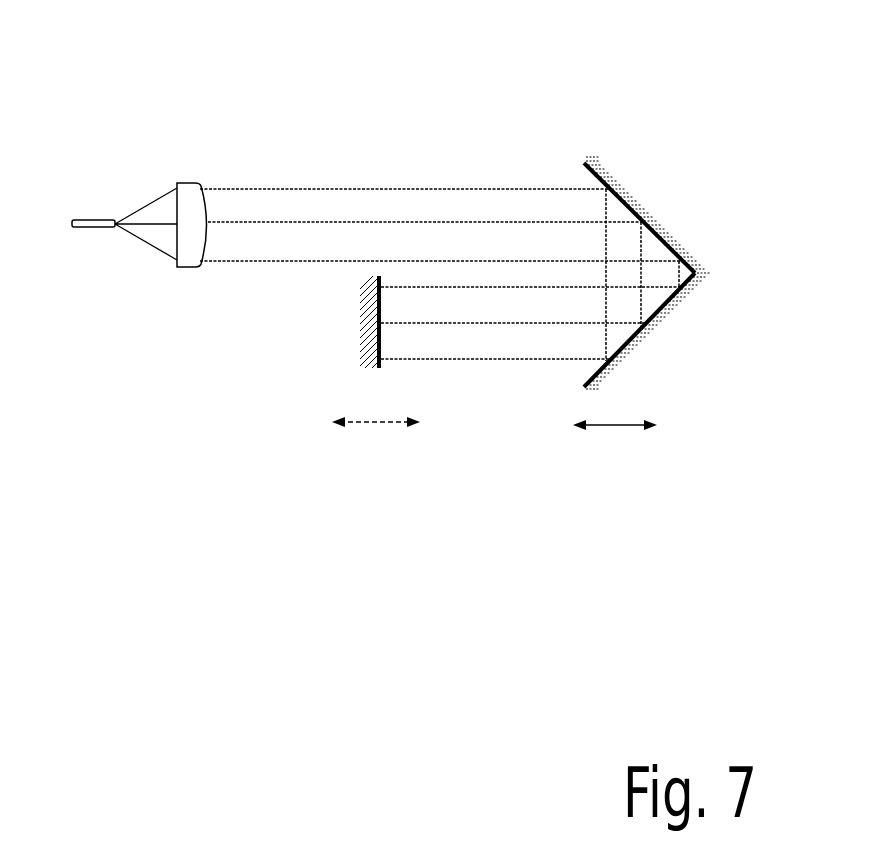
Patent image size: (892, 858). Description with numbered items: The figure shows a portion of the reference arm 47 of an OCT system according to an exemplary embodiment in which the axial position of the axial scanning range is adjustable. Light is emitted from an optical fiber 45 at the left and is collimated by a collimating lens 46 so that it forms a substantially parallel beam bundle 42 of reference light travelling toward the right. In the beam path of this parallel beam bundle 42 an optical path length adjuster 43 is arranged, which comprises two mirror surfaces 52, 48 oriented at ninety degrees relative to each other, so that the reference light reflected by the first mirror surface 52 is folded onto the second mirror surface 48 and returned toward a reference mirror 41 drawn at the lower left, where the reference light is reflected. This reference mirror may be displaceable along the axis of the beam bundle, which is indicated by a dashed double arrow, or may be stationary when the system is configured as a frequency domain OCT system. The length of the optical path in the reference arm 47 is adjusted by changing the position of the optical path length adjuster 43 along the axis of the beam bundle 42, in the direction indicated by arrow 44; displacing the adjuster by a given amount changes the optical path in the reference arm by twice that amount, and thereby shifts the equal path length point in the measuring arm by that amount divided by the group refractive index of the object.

The reference arm 47 is at (231, 66).
The optical fiber 45 is at (95, 218).
The collimating lens 46 is at (189, 190).
The parallel beam bundle 42 is at (326, 200).
The mirror surface 48 is at (617, 347).
The optical path length adjuster 43 is at (727, 178).
The mirror surface 52 is at (610, 196).
The mirror 41 is at (381, 338).
The arrow 44 is at (632, 428).